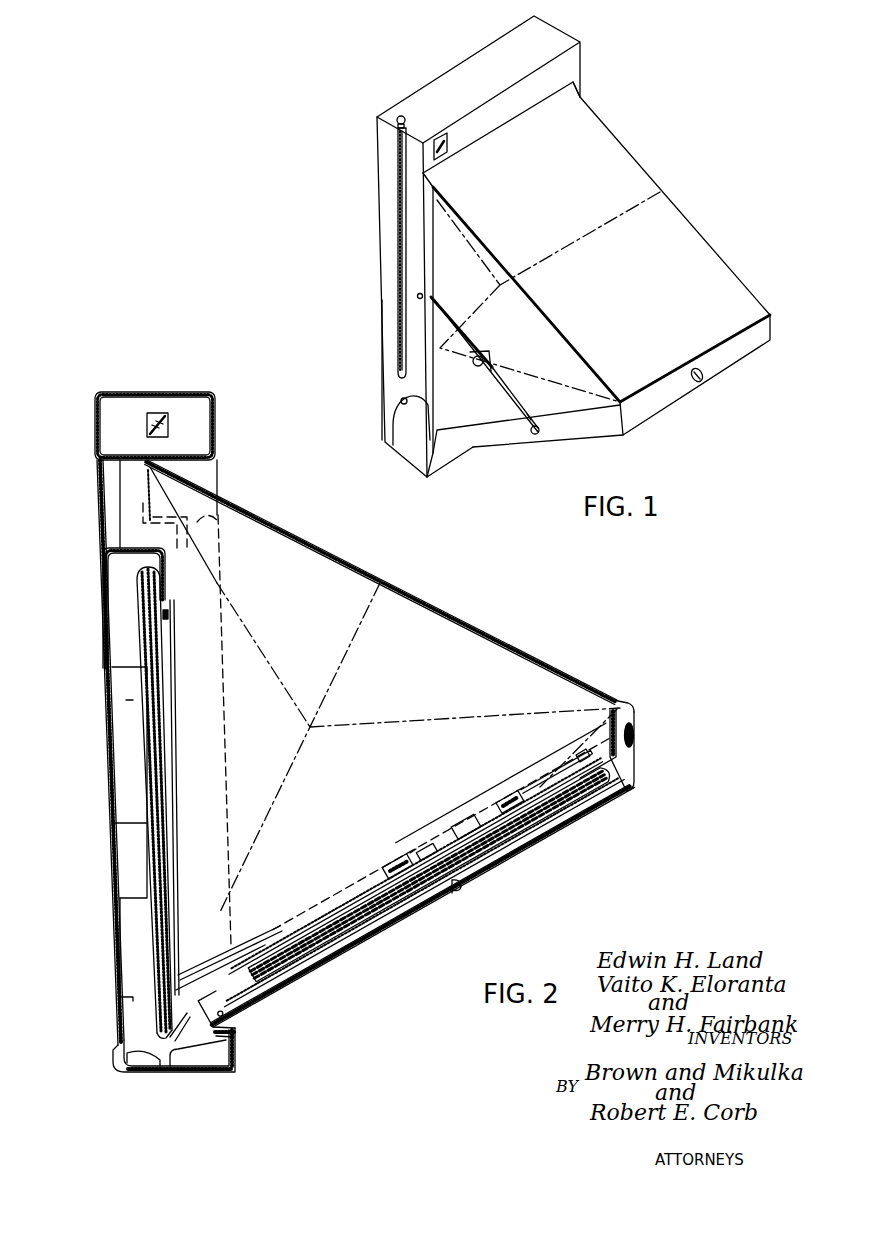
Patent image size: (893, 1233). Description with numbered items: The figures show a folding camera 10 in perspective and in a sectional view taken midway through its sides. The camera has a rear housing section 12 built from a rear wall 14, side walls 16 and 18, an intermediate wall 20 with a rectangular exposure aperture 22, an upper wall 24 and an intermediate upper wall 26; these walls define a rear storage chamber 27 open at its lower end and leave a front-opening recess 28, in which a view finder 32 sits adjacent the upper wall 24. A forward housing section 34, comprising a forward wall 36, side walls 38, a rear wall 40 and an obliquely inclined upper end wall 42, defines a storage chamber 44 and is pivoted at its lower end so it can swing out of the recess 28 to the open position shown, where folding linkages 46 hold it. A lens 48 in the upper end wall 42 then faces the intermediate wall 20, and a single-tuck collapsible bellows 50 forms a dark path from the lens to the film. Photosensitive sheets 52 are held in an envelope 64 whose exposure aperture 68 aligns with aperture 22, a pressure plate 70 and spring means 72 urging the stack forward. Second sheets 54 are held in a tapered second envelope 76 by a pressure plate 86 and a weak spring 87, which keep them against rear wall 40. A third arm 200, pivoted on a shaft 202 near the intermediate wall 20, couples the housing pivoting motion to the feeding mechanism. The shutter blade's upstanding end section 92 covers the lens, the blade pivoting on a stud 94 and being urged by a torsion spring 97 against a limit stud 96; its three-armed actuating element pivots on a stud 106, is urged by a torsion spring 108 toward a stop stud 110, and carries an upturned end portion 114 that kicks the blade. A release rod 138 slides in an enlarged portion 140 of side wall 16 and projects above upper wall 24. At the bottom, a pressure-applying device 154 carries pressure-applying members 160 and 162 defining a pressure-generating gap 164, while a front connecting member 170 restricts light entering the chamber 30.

In FIG. 1, the camera 10 is at (652, 147).
In FIG. 2, the camera 10 is at (536, 633).
In FIG. 1, the rear housing section 12 is at (368, 131).
In FIG. 2, the rear housing section 12 is at (96, 690).
In FIG. 2, the rear wall 14 is at (102, 658).
In FIG. 1, the side wall 16 is at (388, 248).
In FIG. 2, the side wall 18 is at (215, 457).
In FIG. 2, the intermediate wall 20 is at (165, 574).
In FIG. 2, the exposure aperture 22 is at (170, 598).
In FIG. 1, the upper wall 24 is at (486, 62).
In FIG. 2, the upper wall 24 is at (161, 391).
In FIG. 2, the intermediate upper wall 26 is at (137, 542).
In FIG. 2, the rear storage chamber 27 is at (132, 919).
In FIG. 2, the recess 28 is at (215, 478).
In FIG. 2, the chamber 30 is at (233, 1075).
In FIG. 1, the view finder 32 is at (440, 146).
In FIG. 2, the view finder 32 is at (208, 410).
In FIG. 1, the forward housing section 34 is at (592, 452).
In FIG. 2, the forward housing section 34 is at (458, 925).
In FIG. 2, the forward wall 36 is at (514, 866).
In FIG. 1, the side walls 38 is at (576, 440).
In FIG. 2, the side walls 38 is at (540, 752).
In FIG. 2, the rear wall 40 is at (318, 895).
In FIG. 1, the upper end wall 42 is at (632, 420).
In FIG. 2, the upper end wall 42 is at (210, 525).
In FIG. 2, the storage chamber 44 is at (366, 940).
In FIG. 1, the folding linkages 46 is at (490, 380).
In FIG. 1, the lens 48 is at (704, 382).
In FIG. 2, the lens 48 is at (638, 733).
In FIG. 1, the collapsible bellows 50 is at (635, 273).
In FIG. 2, the collapsible bellows 50 is at (437, 612).
In FIG. 2, the photosensitive sheets 52 is at (122, 946).
In FIG. 2, the second sheets 54 is at (283, 1000).
In FIG. 2, the envelope 64 is at (118, 796).
In FIG. 2, the exposure aperture 68 is at (168, 616).
In FIG. 2, the pressure plate 70 is at (146, 728).
In FIG. 2, the spring means 72 is at (112, 633).
In FIG. 2, the second envelope 76 is at (463, 886).
In FIG. 2, the pressure plate 86 is at (406, 912).
In FIG. 2, the spring 87 is at (308, 968).
In FIG. 2, the end section 92 is at (614, 698).
In FIG. 2, the stud 94 is at (508, 805).
In FIG. 2, the stud 96 is at (576, 757).
In FIG. 2, the torsion spring 97 is at (548, 788).
In FIG. 2, the stud 106 is at (386, 866).
In FIG. 2, the torsion spring 108 is at (406, 849).
In FIG. 2, the stud 110 is at (428, 840).
In FIG. 2, the upturned end portion 114 is at (468, 826).
In FIG. 1, the rod 138 is at (398, 116).
In FIG. 1, the enlarged portion 140 is at (400, 195).
In FIG. 1, the pressure-applying device 154 is at (408, 480).
In FIG. 2, the pressure-applying device 154 is at (106, 1072).
In FIG. 2, the pressure-applying member 160 is at (202, 1085).
In FIG. 2, the pressure-applying member 162 is at (146, 1085).
In FIG. 2, the pressure-generating gap 164 is at (165, 1076).
In FIG. 2, the front connecting member 170 is at (238, 1033).
In FIG. 2, the arm 200 is at (228, 925).
In FIG. 2, the shaft 202 is at (188, 960).